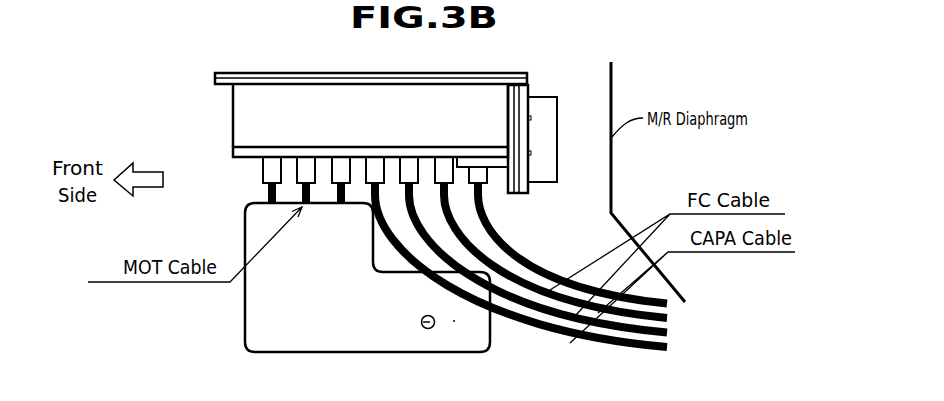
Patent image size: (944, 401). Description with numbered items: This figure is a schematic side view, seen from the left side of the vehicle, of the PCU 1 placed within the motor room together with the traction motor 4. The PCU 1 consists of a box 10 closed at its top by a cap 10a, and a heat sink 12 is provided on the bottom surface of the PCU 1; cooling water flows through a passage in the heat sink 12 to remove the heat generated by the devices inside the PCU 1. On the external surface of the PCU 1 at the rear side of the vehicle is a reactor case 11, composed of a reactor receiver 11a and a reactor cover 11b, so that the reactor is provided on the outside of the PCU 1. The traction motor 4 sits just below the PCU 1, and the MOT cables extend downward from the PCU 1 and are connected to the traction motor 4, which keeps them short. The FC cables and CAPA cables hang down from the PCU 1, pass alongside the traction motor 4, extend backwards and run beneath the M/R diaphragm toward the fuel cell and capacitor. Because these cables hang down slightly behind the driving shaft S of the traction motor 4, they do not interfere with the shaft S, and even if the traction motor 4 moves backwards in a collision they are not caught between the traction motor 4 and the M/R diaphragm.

The PCU 1 is at (181, 79).
The cap 10a is at (215, 76).
The box 10 is at (245, 108).
The heat sink 12 is at (245, 155).
The reactor case 11 is at (538, 98).
The reactor receiver 11a is at (517, 197).
The reactor cover 11b is at (547, 160).
The traction motor 4 is at (252, 307).
The driving shaft S is at (421, 323).